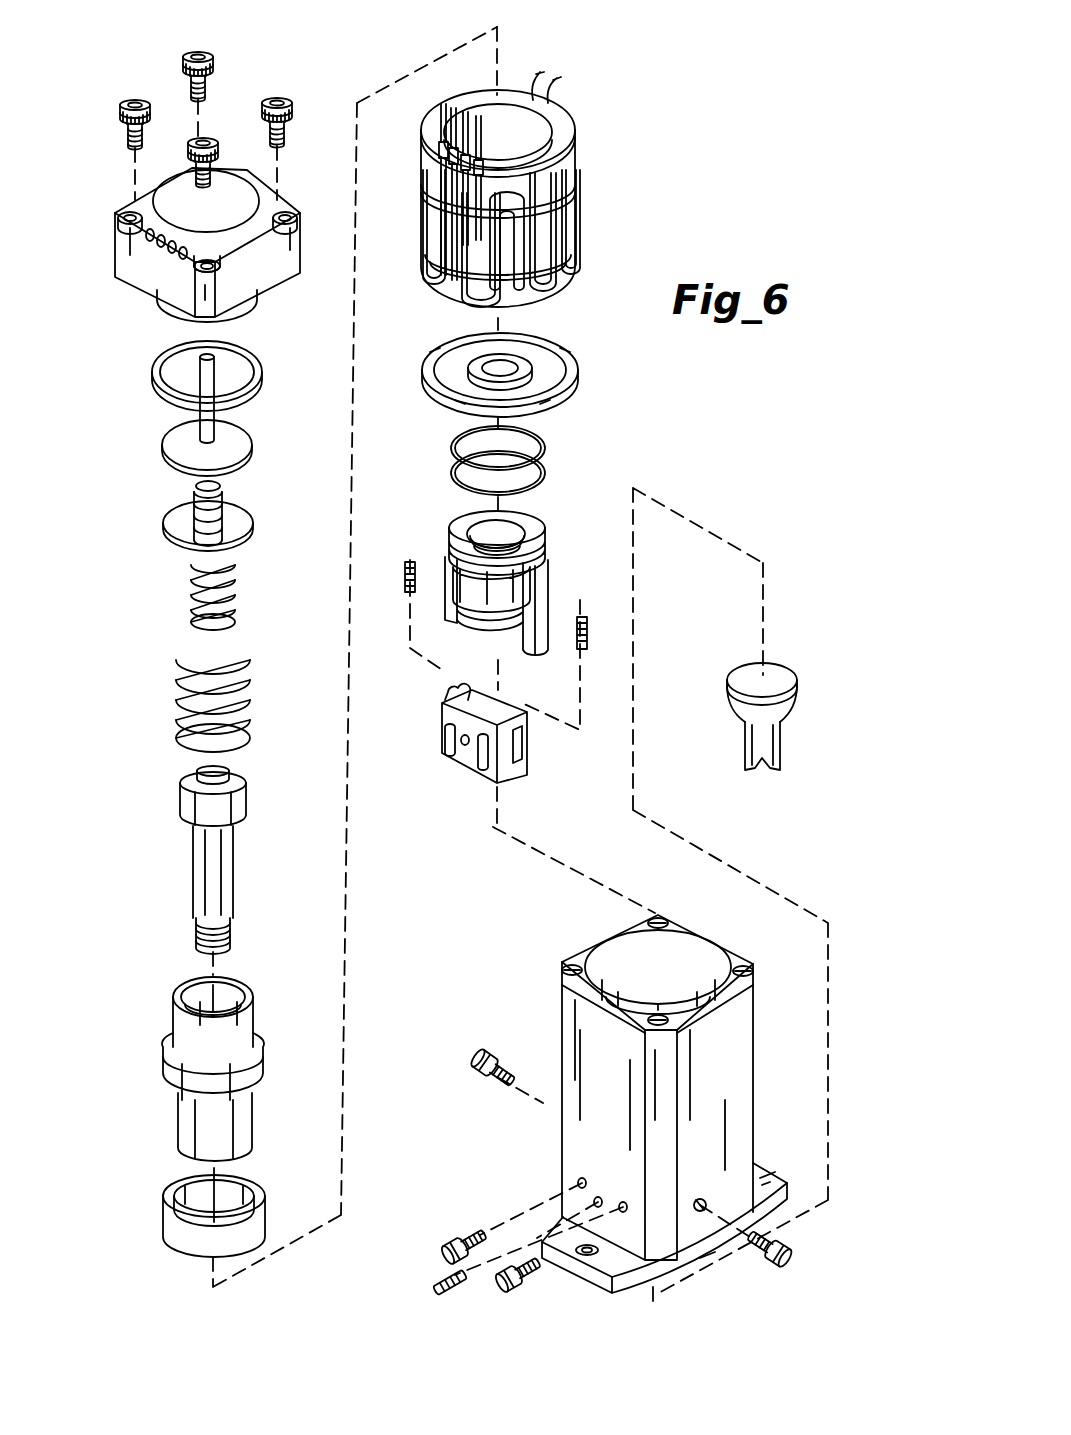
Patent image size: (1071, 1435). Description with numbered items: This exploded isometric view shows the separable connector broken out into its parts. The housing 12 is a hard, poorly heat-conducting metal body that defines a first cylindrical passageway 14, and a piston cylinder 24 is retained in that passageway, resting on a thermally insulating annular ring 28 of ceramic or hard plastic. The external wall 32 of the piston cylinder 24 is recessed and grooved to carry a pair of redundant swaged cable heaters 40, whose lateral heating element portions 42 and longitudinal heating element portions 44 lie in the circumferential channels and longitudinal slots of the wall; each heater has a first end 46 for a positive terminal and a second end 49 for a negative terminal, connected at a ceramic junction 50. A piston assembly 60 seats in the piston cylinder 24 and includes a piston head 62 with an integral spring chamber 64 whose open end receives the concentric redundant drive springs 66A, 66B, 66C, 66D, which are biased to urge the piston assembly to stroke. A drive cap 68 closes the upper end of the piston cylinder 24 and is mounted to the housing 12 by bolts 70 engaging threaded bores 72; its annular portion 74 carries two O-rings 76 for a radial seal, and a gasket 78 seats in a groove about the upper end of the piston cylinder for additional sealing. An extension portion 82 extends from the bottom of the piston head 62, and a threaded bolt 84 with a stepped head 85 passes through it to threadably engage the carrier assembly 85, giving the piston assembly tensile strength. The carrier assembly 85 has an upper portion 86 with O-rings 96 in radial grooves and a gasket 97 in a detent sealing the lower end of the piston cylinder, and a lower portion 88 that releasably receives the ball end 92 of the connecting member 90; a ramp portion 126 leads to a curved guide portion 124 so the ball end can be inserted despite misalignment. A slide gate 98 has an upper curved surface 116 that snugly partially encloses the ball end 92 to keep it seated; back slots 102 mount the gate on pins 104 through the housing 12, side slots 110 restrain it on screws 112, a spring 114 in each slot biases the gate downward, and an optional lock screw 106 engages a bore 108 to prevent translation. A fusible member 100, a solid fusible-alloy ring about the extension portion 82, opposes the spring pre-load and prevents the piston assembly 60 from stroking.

The housing 12 is at (640, 1104).
The first cylindrical passageway 14 is at (517, 106).
The piston cylinder 24 is at (510, 166).
The annular ring 28 is at (530, 362).
The external wall 32 is at (570, 250).
The swaged cable heaters 40 is at (578, 165).
The lateral heating element portions 42 is at (565, 150).
The longitudinal heating element portions 44 is at (535, 240).
The first end 46 is at (445, 160).
The second end 49 is at (462, 202).
The ceramic junction 50 is at (450, 125).
The piston assembly 60 is at (193, 1058).
The piston head 62 is at (265, 1065).
The spring chamber 64 is at (250, 1010).
The drive spring 66A is at (178, 665).
The drive spring 66B is at (238, 588).
The drive spring 66C is at (222, 495).
The drive spring 66D is at (212, 420).
The drive cap 68 is at (263, 277).
The bolts 70 is at (273, 102).
The threaded bores 72 is at (743, 968).
The annular portion 74 is at (162, 312).
The O-rings 76 is at (177, 507).
The gasket 78 is at (150, 372).
The extension portion 82 is at (250, 1122).
The threaded bolt 84 is at (193, 873).
The carrier assembly 85 is at (182, 798).
The upper portion 86 is at (548, 562).
The lower portion 88 is at (515, 607).
The connecting member 90 is at (740, 697).
The ball end 92 is at (768, 675).
The O-rings 96 is at (548, 468).
The gasket 97 is at (527, 368).
The slide gate 98 is at (489, 770).
The fusible member 100 is at (170, 1192).
The back slots 102 is at (455, 750).
The pins 104 is at (462, 1245).
The lock screw 106 is at (435, 1280).
The bore 108 is at (465, 750).
The side slots 110 is at (520, 760).
The screws 112 is at (498, 1022).
The spring 114 is at (412, 560).
The upper curved surface 116 is at (455, 713).
The curved guide portion 124 is at (515, 640).
The ramp portion 126 is at (490, 615).